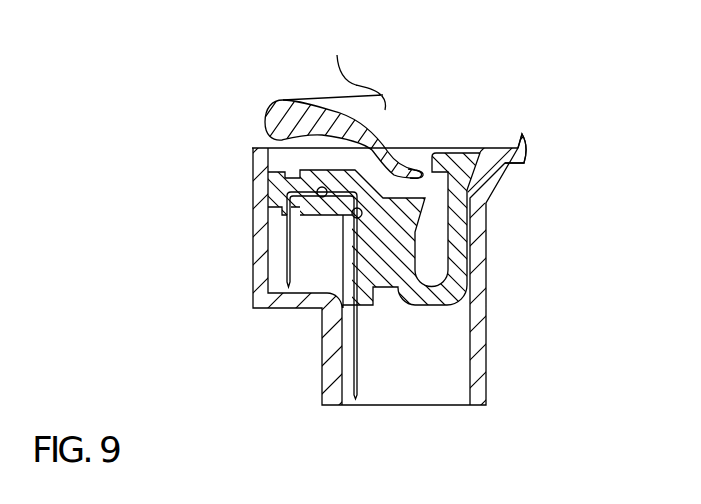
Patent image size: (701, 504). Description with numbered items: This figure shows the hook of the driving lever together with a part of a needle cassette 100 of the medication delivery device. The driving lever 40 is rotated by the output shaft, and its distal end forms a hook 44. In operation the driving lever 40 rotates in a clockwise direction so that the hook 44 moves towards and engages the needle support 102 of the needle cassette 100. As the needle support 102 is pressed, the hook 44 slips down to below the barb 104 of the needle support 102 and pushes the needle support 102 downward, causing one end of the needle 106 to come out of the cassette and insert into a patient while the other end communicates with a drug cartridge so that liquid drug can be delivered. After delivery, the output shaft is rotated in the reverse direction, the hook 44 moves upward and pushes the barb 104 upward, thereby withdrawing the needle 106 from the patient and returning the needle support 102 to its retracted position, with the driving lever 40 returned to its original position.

The driving lever 40 is at (385, 138).
The hook 44 is at (414, 166).
The needle cassette 100 is at (492, 304).
The needle support 102 is at (403, 235).
The barb 104 is at (465, 160).
The needle 106 is at (355, 348).